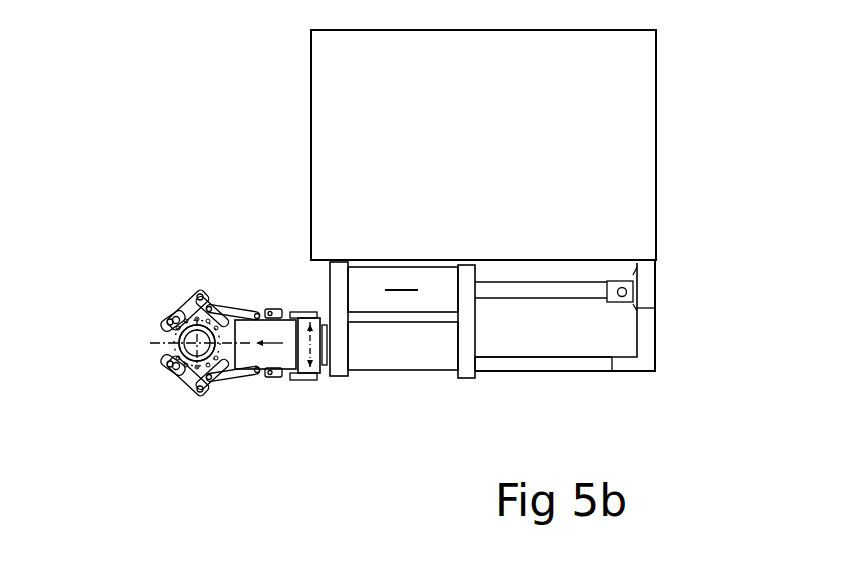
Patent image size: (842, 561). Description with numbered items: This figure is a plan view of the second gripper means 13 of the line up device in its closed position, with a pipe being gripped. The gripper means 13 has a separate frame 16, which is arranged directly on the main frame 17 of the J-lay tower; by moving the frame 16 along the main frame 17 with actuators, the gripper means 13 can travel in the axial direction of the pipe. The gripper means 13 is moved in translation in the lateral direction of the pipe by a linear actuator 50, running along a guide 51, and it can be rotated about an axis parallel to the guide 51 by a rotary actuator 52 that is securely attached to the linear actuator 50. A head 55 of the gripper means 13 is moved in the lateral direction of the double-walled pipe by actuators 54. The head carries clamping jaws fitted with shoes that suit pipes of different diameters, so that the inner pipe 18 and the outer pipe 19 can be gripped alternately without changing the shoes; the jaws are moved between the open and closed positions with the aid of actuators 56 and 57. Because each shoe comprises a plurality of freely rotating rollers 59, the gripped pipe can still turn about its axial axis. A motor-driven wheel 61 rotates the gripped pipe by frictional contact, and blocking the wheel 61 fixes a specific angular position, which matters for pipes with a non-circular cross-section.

The second gripper means 13 is at (262, 432).
The frame 16 is at (645, 333).
The main frame 17 is at (632, 122).
The inner pipe 18 is at (160, 343).
The outer pipe 19 is at (197, 343).
The linear actuator 50 is at (437, 287).
The guide 51 is at (553, 372).
The rotary actuator 52 is at (425, 360).
The actuator 54 is at (300, 311).
The head 55 is at (248, 362).
The actuator 56 is at (237, 307).
The actuator 57 is at (197, 298).
The roller 59 is at (178, 312).
The wheel 61 is at (268, 307).